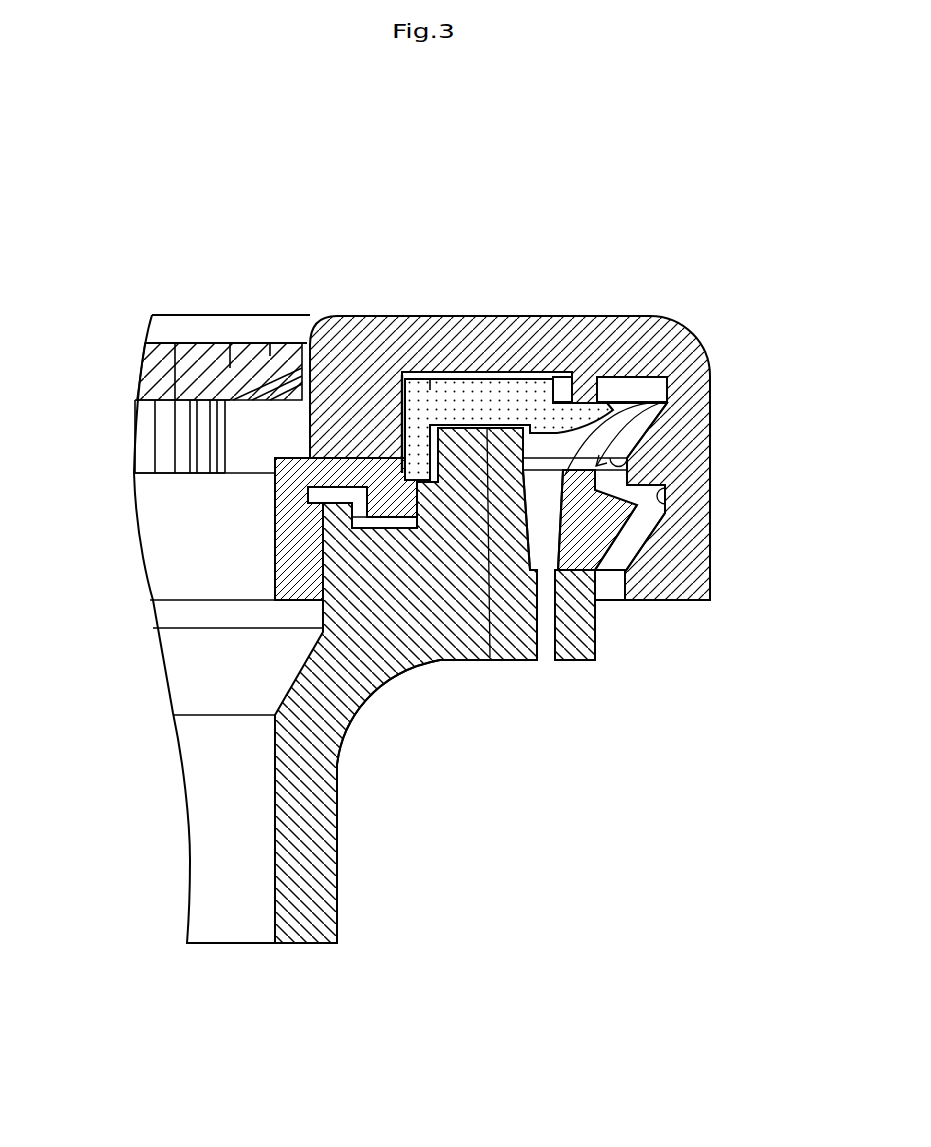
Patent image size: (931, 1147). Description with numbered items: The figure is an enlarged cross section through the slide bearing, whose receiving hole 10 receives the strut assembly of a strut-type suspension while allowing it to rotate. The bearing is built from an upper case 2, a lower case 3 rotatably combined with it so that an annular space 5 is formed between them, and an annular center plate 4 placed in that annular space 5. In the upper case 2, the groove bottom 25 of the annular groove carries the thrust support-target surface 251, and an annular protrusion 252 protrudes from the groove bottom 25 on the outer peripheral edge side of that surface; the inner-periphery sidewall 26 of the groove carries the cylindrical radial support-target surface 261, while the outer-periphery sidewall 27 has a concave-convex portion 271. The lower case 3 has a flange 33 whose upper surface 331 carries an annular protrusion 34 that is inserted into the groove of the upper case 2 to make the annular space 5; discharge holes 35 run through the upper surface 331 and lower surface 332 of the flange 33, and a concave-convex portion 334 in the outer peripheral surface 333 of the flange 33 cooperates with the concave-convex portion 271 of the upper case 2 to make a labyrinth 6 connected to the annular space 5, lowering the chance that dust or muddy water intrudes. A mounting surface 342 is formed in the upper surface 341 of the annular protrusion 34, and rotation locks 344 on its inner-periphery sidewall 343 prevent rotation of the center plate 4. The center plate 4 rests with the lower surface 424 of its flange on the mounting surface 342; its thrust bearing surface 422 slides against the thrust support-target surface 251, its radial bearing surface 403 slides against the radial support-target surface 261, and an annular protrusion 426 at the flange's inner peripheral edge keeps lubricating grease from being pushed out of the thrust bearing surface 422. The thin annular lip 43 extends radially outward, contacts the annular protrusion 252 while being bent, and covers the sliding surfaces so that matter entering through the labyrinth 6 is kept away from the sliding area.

The receiving hole 10 is at (198, 310).
The upper case 2 is at (537, 316).
The lower case 3 is at (338, 862).
The annular center plate 4 is at (378, 316).
The annular space 5 is at (559, 443).
The labyrinth 6 is at (608, 590).
The groove bottom 25 is at (546, 346).
The thrust support-target surface 251 is at (488, 405).
The annular protrusion 252 is at (608, 405).
The inner-periphery sidewall 26 is at (405, 438).
The radial support-target surface 261 is at (405, 480).
The outer-periphery sidewall 27 is at (686, 467).
The concave-convex portion 271 is at (710, 441).
The flange 33 is at (524, 591).
The upper surface 331 is at (630, 452).
The lower surface 332 is at (448, 660).
The outer peripheral surface 333 is at (598, 642).
The concave-convex portion 334 is at (662, 503).
The annular protrusion 34 is at (565, 372).
The upper surface 341 is at (440, 427).
The mounting surface 342 is at (419, 376).
The inner-periphery sidewall 343 is at (236, 529).
The rotation locks 344 is at (367, 497).
The discharge holes 35 is at (546, 665).
The radial bearing surface 403 is at (403, 455).
The thrust bearing surface 422 is at (456, 426).
The lower surface 424 is at (492, 657).
The annular protrusion 426 is at (402, 382).
The annular lip 43 is at (650, 388).